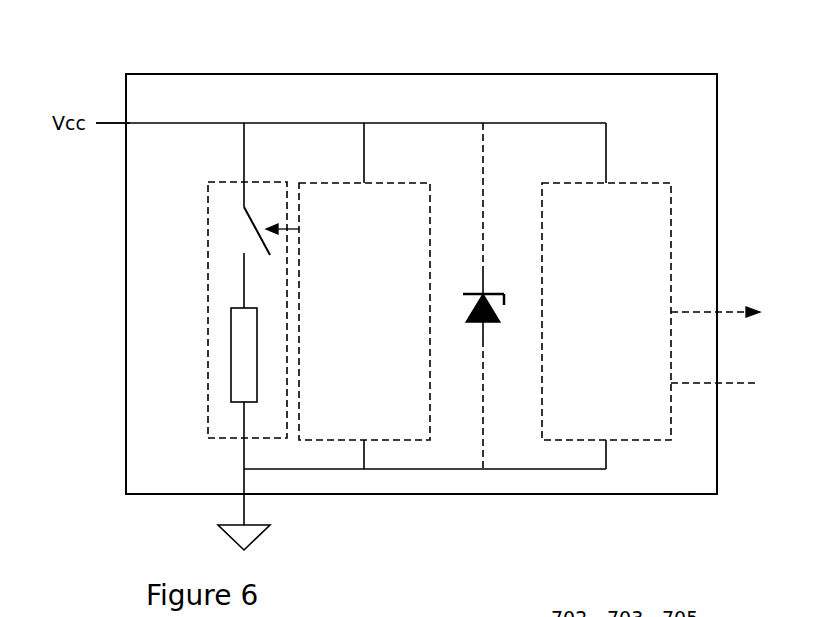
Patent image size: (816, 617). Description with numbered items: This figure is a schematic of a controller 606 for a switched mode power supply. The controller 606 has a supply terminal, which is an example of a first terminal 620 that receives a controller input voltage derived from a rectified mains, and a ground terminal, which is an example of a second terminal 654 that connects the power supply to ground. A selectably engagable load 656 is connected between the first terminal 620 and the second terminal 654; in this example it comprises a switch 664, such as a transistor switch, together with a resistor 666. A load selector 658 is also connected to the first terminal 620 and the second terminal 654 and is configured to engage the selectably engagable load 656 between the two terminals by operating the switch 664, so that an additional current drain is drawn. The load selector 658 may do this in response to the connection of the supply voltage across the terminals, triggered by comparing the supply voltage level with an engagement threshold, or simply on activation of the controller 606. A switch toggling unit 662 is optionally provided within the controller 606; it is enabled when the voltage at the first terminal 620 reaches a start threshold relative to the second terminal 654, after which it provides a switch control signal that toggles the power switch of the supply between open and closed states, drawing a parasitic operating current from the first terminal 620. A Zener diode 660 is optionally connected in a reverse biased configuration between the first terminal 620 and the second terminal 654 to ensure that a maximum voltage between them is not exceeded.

The controller 606 is at (185, 74).
The first terminal 620 is at (126, 123).
The second terminal 654 is at (246, 497).
The selectably engagable load 656 is at (206, 333).
The load selector 658 is at (364, 311).
The Zener diode 660 is at (490, 288).
The switch toggling unit 662 is at (651, 311).
The switch 664 is at (254, 228).
The resistor 666 is at (230, 378).